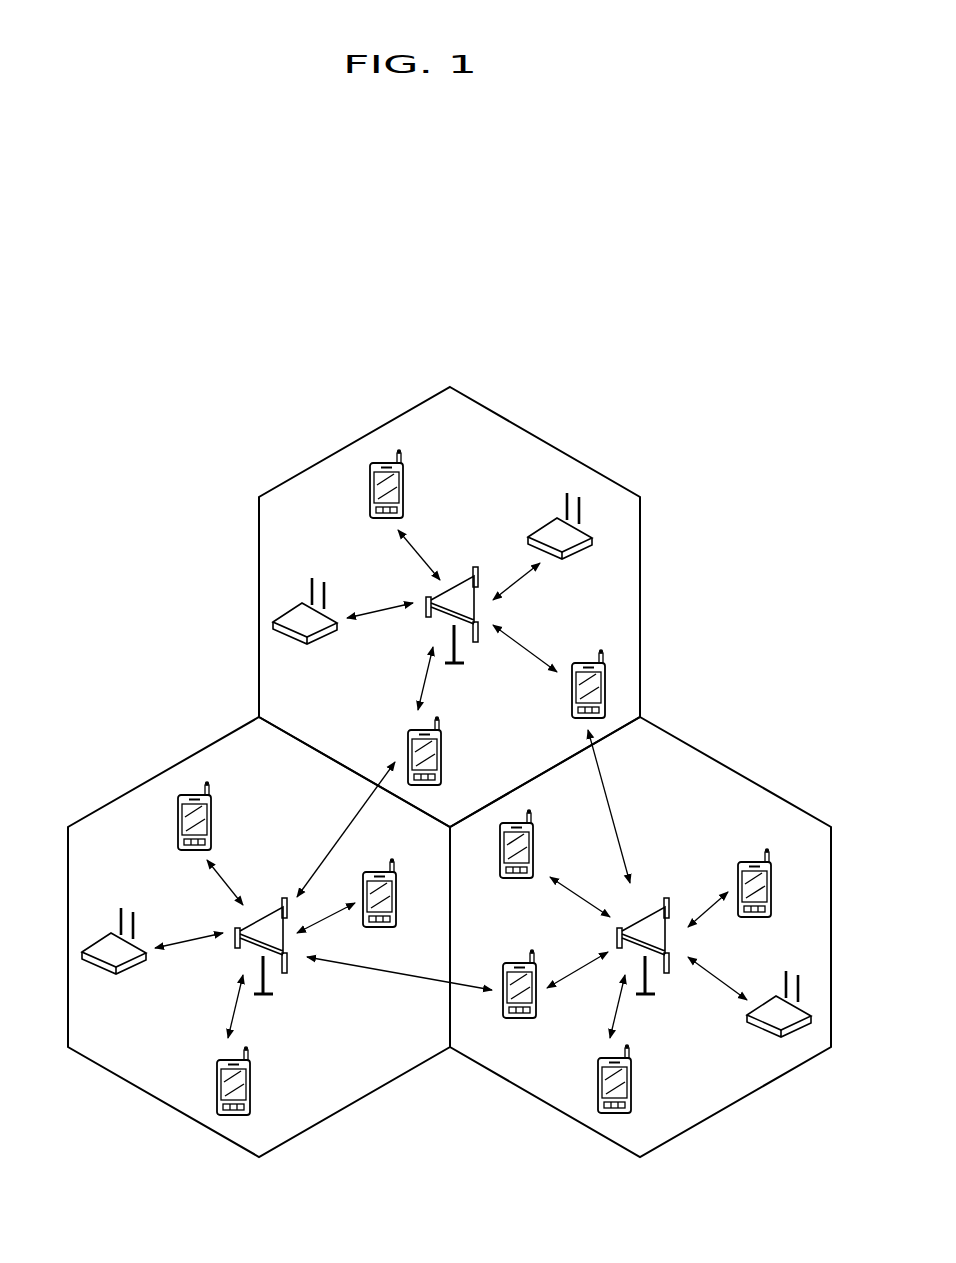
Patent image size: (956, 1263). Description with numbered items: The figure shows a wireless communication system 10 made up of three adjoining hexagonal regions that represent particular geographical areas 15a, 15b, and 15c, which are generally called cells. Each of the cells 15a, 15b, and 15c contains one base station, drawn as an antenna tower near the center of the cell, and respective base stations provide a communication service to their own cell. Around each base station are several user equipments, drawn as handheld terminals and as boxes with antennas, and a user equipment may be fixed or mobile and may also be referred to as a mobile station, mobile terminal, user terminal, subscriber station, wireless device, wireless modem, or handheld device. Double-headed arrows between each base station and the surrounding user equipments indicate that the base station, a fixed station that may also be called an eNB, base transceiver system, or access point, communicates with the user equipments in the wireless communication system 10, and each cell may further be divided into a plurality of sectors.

The wireless communication system 10 is at (722, 502).
The cell 15a is at (642, 593).
The cell 15b is at (764, 788).
The cell 15c is at (134, 785).